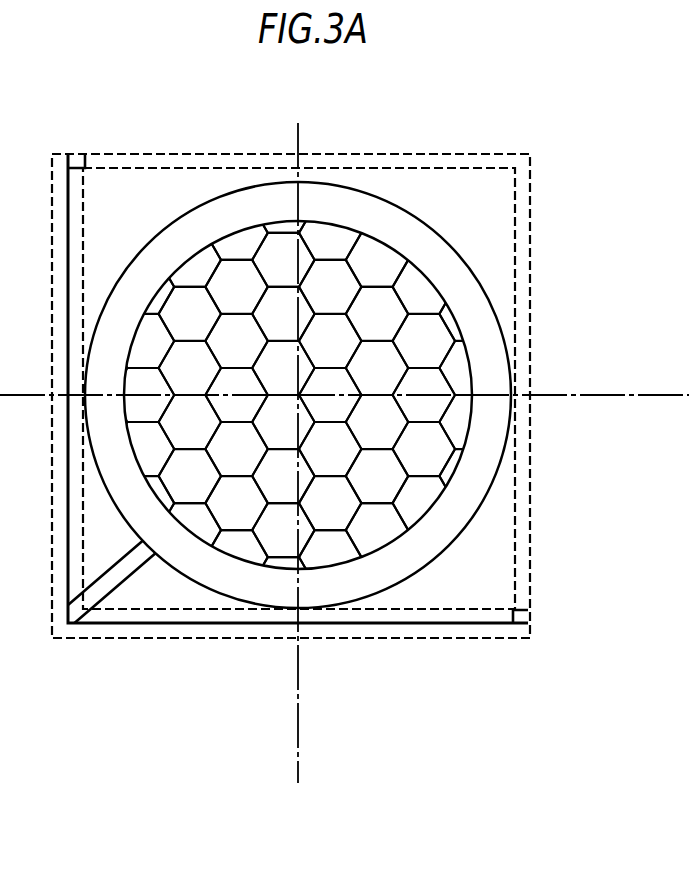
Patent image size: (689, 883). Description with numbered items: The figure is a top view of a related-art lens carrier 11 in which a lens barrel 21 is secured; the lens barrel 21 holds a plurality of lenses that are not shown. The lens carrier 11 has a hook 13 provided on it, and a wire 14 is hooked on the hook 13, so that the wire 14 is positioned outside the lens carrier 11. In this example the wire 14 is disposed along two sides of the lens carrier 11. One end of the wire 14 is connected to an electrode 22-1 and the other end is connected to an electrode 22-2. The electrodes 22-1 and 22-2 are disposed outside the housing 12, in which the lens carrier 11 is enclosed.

The lens carrier 11 is at (463, 507).
The housing 12 is at (515, 198).
The hook 13 is at (118, 587).
The wire 14 is at (483, 625).
The lens barrel 21 is at (435, 348).
The electrode 22-1 is at (525, 615).
The electrode 22-2 is at (78, 160).